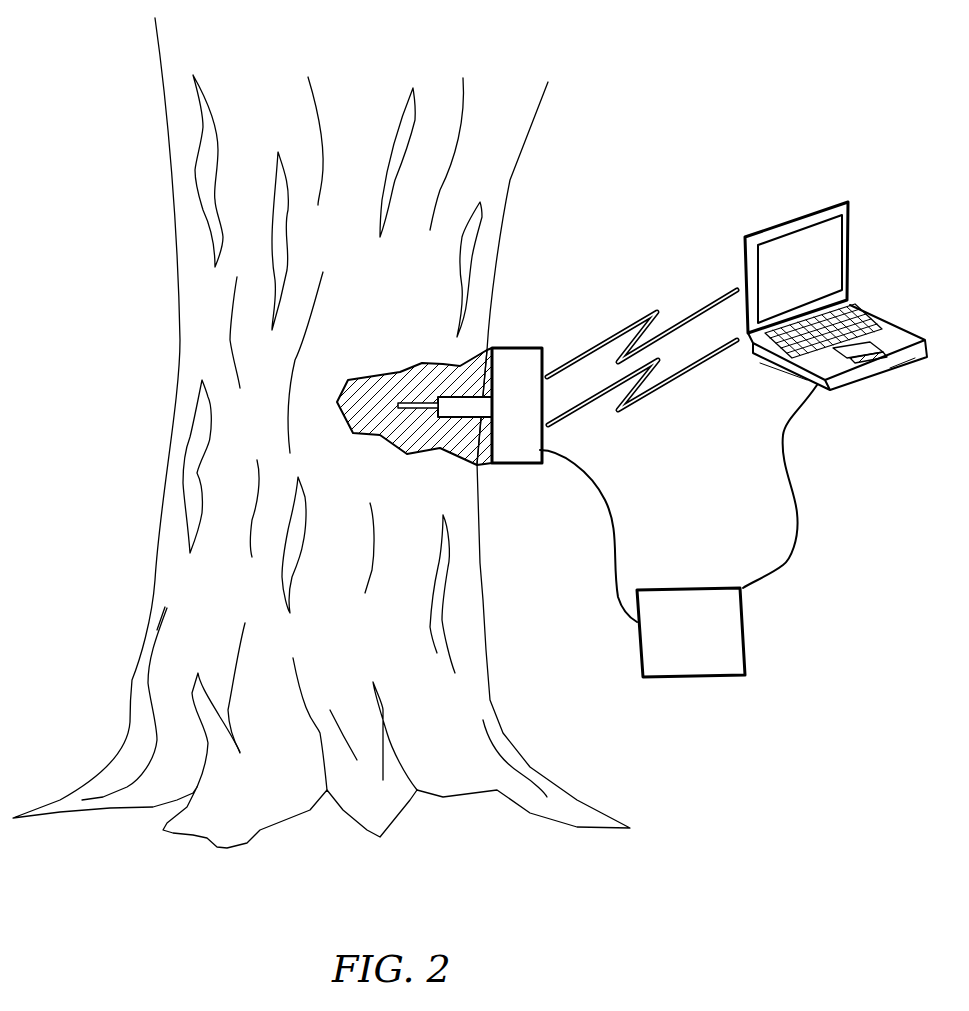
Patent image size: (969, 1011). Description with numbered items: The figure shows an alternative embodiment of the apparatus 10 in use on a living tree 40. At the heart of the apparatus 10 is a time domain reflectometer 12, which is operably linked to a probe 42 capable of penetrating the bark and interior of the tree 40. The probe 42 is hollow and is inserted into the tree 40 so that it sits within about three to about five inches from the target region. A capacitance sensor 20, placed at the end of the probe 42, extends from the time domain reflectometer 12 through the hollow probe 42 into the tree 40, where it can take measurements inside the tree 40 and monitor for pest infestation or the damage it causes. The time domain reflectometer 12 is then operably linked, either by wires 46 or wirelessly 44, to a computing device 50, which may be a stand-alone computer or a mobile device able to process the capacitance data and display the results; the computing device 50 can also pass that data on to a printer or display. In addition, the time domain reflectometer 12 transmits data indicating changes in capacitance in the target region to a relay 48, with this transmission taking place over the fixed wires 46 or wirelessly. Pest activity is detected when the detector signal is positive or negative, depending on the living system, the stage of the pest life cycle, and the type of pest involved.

The apparatus 10 is at (515, 317).
The time domain reflectometer 12 is at (527, 463).
The capacitance sensor 20 is at (412, 447).
The tree 40 is at (197, 340).
The probe 42 is at (457, 400).
The wireless link 44 is at (663, 387).
The wires 46 is at (612, 557).
The relay 48 is at (745, 640).
The computing device 50 is at (765, 228).